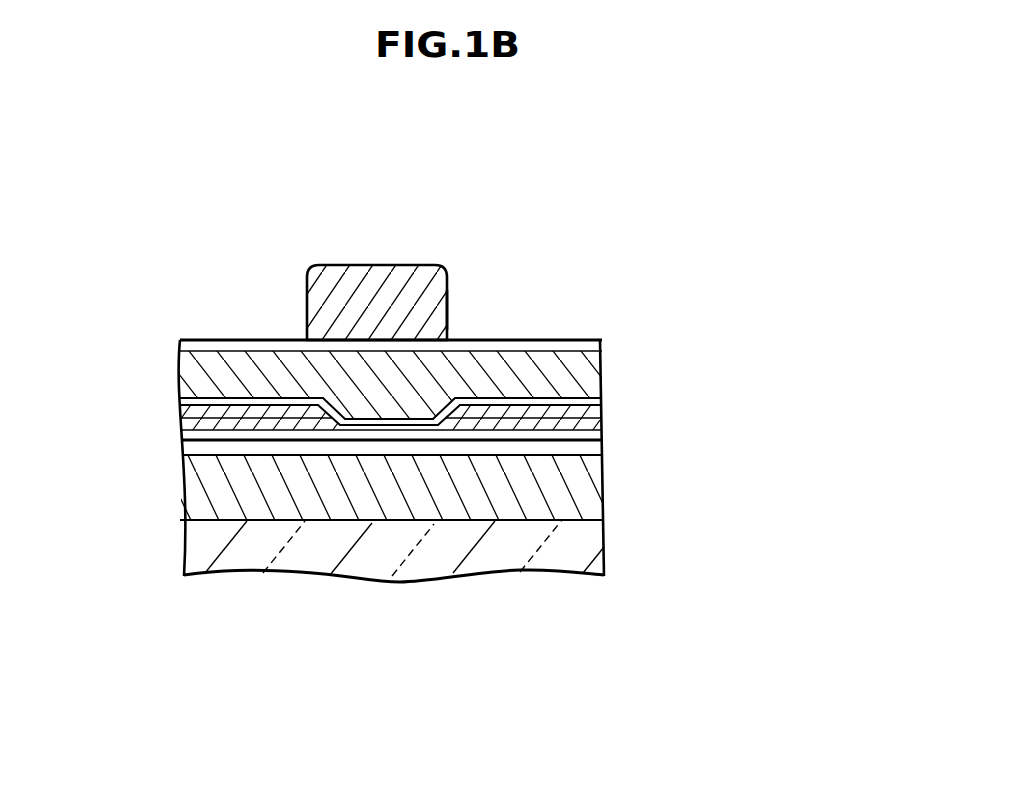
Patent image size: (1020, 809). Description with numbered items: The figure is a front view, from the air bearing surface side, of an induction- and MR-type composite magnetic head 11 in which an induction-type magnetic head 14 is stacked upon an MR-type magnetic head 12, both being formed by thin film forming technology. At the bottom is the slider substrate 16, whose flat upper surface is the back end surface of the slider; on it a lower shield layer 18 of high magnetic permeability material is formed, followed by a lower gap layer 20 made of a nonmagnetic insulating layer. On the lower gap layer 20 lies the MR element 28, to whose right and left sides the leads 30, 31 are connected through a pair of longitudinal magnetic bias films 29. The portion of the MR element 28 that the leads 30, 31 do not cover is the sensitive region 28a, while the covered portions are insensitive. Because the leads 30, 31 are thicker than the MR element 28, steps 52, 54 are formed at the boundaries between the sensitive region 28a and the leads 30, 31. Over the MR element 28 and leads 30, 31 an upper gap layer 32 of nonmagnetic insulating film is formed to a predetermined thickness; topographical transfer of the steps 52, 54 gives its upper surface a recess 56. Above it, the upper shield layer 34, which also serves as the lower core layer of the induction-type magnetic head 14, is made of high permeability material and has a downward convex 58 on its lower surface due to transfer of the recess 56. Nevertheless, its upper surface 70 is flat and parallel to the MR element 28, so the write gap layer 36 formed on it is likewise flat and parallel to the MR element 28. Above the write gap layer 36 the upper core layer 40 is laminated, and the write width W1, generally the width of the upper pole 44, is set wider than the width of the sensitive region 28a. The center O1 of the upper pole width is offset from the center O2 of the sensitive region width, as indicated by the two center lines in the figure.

The induction- and MR-type composite magnetic head 11 is at (506, 145).
The MR-type magnetic head 12 is at (700, 335).
The induction-type magnetic head 14 is at (730, 262).
The slider substrate 16 is at (195, 548).
The lower shield layer 18 is at (205, 495).
The lower gap layer 20 is at (202, 452).
The MR element 28 is at (187, 437).
The MR element sensitive region 28a is at (355, 405).
The longitudinal magnetic bias films 29 is at (183, 422).
The lead 30 is at (602, 413).
The lead 31 is at (183, 412).
The upper gap layer 32 is at (602, 399).
The upper shield layer (upper shield-lower core layer) 34 is at (602, 372).
The write gap layer 36 is at (602, 341).
The upper core layer 40 is at (462, 261).
The upper pole 44 is at (448, 302).
The step 52 is at (466, 416).
The step 54 is at (322, 413).
The recess 56 is at (378, 352).
The downward convex 58 is at (372, 428).
The upper surface of the upper shield-lower core layer 70 is at (340, 352).
The center of the upper pole width O1 is at (375, 560).
The center of the MR element sensitive region width O2 is at (393, 400).
The write width W1 is at (446, 263).